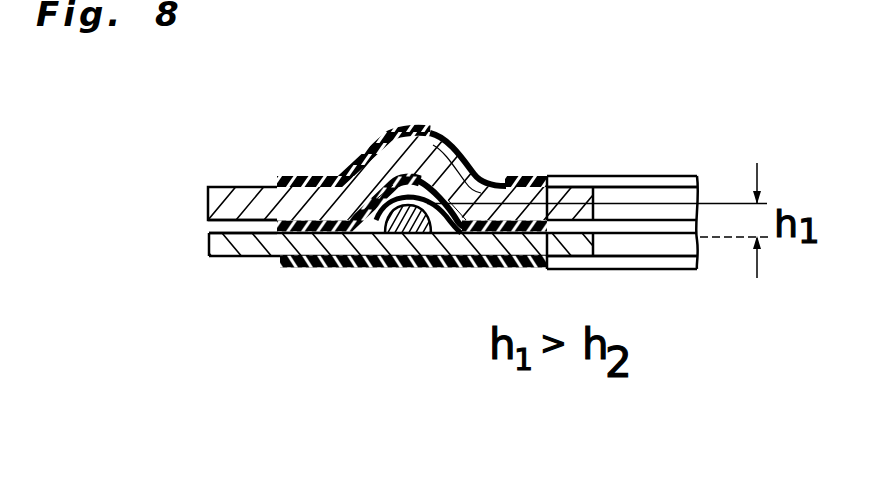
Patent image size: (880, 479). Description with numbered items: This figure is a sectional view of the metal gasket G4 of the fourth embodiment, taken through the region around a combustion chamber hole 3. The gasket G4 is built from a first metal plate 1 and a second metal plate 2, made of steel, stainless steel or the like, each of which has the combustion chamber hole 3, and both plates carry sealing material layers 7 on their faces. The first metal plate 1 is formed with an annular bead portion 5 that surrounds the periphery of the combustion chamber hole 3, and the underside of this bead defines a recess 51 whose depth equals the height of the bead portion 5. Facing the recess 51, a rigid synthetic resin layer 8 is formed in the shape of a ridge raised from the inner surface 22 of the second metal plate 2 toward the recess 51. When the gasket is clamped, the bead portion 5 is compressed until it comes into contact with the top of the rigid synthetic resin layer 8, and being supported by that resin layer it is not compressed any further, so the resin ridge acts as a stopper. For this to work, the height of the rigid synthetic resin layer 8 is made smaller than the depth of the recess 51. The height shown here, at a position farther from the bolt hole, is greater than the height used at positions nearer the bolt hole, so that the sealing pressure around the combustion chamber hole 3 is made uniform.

The first metal plate 1 is at (247, 202).
The second metal plate 2 is at (247, 241).
The inner surface of the second metal plate 22 is at (226, 234).
The combustion chamber hole 3 is at (664, 245).
The bead portion 5 is at (423, 163).
The recess 51 is at (382, 216).
The sealing material layer 7 is at (523, 262).
The rigid synthetic resin layer 8 is at (408, 226).
The metal gasket G4 is at (586, 164).